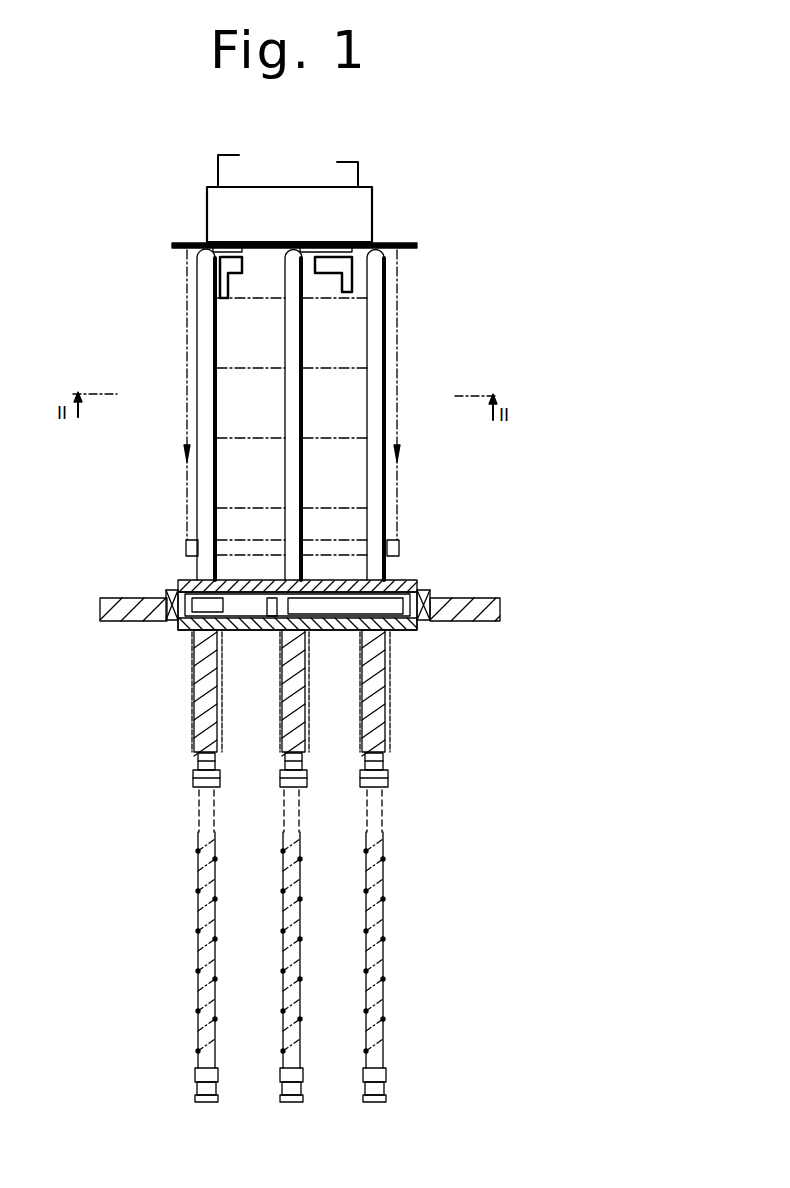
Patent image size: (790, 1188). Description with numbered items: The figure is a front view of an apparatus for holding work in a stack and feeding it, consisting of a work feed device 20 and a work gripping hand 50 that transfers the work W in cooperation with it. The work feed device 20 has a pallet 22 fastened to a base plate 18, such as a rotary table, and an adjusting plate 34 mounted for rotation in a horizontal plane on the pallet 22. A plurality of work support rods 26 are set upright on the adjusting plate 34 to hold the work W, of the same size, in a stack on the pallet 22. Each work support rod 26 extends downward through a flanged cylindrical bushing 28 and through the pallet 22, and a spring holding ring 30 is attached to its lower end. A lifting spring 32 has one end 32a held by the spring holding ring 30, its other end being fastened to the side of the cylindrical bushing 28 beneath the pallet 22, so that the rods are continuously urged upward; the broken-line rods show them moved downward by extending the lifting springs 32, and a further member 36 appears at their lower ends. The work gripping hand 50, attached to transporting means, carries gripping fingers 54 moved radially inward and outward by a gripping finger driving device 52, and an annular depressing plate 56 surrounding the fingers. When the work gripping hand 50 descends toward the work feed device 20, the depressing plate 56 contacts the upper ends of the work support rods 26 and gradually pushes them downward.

The base plate 18 is at (480, 622).
The work feed device 20 is at (175, 425).
The pallet 22 is at (178, 630).
The work support rod 26 is at (213, 458).
The cylindrical bushing 28 is at (280, 718).
The spring holding ring 30 is at (193, 781).
The lifting spring 32 is at (193, 727).
The one end of lifting spring 32a is at (217, 783).
The adjusting plate 34 is at (402, 581).
The lower nuts 36 is at (195, 1073).
The work gripping hand 50 is at (362, 173).
The gripping finger driving device 52 is at (360, 207).
The gripping finger 54 is at (352, 272).
The depressing plate 56 is at (180, 243).
The work W is at (362, 328).